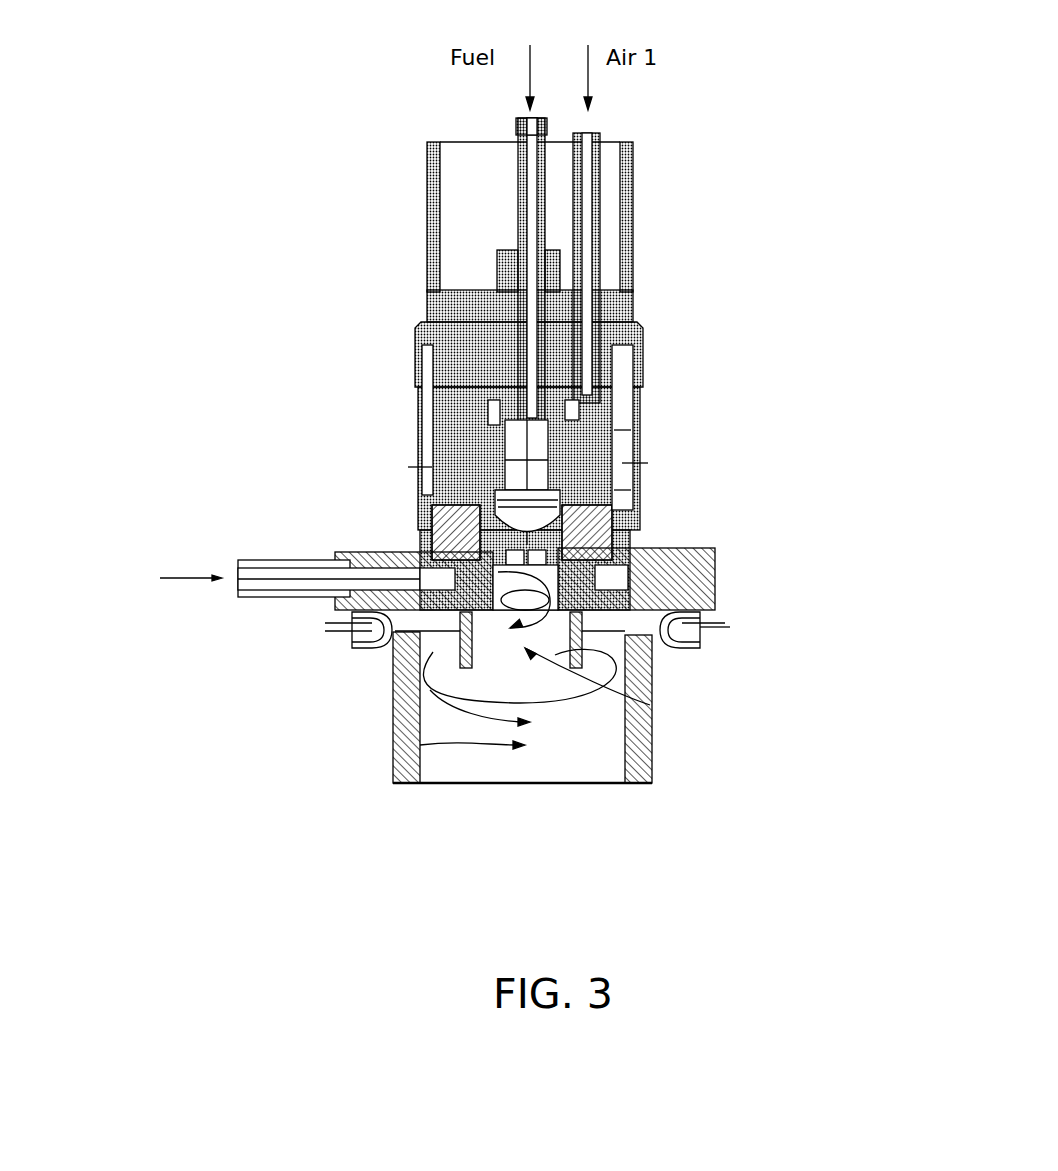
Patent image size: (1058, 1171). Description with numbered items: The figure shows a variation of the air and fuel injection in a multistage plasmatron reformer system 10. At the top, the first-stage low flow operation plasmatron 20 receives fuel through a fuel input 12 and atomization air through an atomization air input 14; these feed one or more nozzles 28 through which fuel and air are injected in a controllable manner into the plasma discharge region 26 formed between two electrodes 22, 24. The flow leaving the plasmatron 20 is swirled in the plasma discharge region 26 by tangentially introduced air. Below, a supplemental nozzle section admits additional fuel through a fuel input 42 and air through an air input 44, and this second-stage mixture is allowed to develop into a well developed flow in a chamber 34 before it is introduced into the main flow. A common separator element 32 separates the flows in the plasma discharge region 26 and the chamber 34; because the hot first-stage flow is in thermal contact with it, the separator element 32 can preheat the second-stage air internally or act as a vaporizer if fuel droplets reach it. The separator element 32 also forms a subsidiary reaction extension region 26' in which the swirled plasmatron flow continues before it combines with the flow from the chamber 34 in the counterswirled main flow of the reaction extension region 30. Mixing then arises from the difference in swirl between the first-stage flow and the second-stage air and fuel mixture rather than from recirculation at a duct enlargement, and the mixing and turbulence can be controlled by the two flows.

The multistage plasmatron reformer system 10 is at (222, 220).
The fuel input 12 is at (518, 130).
The atomization air input 14 is at (600, 133).
The low flow operation plasmatron 20 is at (615, 415).
The electrode 22 is at (435, 495).
The electrode 24 is at (450, 565).
The plasma discharge region 26 is at (722, 538).
The subsidiary reaction extension region 26' is at (591, 678).
The nozzle 28 is at (445, 450).
The reaction extension region 30 is at (420, 752).
The separator element 32 is at (597, 645).
The chamber 34 is at (422, 637).
The fuel input 42 is at (300, 627).
The air input 44 is at (335, 640).